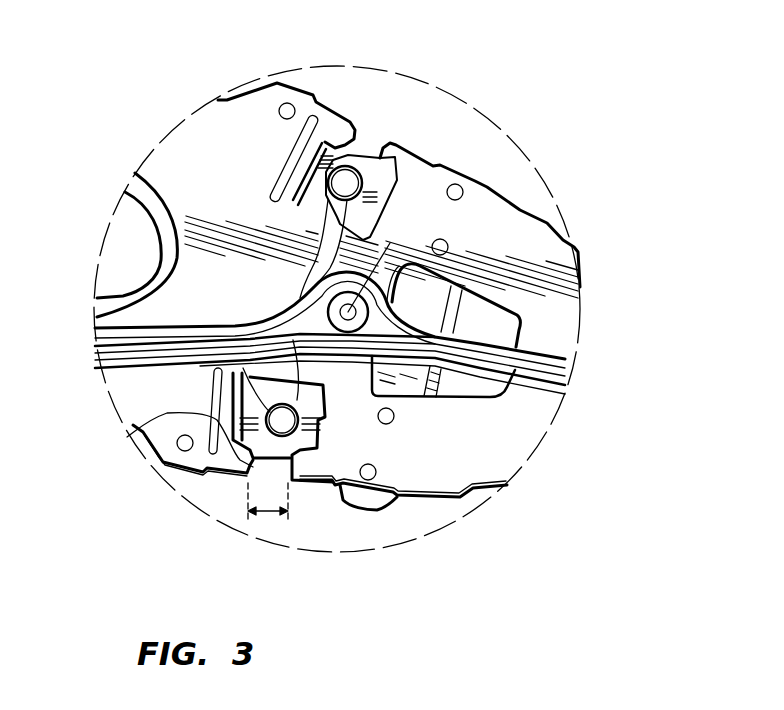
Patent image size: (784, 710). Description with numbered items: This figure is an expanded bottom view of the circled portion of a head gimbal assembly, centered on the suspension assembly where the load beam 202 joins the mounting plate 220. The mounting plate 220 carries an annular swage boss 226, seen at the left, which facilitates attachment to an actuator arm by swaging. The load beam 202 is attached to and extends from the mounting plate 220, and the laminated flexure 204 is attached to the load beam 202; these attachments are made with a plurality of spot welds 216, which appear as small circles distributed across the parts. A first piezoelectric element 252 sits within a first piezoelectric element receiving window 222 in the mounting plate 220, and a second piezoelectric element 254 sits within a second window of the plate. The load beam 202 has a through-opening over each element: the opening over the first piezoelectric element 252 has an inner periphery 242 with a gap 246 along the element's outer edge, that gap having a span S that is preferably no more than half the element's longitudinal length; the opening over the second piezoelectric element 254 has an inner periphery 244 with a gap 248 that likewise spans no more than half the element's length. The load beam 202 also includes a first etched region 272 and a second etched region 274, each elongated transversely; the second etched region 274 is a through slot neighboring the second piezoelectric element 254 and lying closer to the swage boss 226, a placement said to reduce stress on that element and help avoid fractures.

The load beam 202 is at (552, 333).
The laminated flexure 204 is at (537, 377).
The spot welds 216 is at (280, 106).
The mounting plate 220 is at (433, 298).
The first piezoelectric element receiving window 222 is at (340, 497).
The annular swage boss 226 is at (160, 208).
The inner periphery 242 is at (200, 448).
The inner periphery 244 is at (326, 195).
The gap 246 is at (227, 467).
The gap 248 is at (373, 140).
The first piezoelectric element 252 is at (298, 397).
The second piezoelectric element 254 is at (315, 193).
The first etched region 272 is at (127, 437).
The second etched region 274 is at (293, 140).
The span S is at (267, 513).